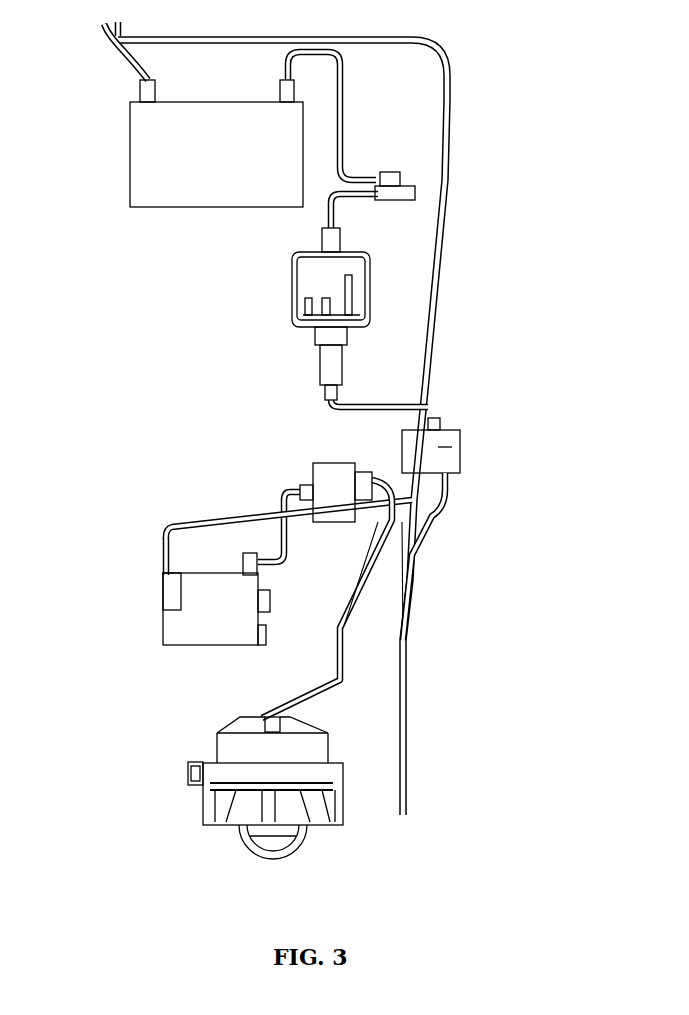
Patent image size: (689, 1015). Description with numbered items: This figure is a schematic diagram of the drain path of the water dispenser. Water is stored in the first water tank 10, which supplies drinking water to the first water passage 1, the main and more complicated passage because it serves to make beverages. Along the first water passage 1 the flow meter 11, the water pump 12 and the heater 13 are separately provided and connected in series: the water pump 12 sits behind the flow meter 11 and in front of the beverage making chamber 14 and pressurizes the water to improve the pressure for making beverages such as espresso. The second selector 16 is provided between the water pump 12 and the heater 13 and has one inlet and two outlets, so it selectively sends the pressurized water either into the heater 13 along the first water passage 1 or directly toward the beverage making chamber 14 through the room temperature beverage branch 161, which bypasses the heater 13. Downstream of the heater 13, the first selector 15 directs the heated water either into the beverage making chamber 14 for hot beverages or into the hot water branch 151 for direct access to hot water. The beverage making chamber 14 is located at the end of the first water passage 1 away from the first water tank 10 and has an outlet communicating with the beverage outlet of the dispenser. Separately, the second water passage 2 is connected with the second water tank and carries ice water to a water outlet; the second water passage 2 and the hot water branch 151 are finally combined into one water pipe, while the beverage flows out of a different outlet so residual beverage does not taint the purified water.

The first water passage 1 is at (118, 52).
The second water passage 2 is at (452, 106).
The first water tank 10 is at (145, 158).
The flow meter 11 is at (414, 194).
The water pump 12 is at (305, 288).
The heater 13 is at (175, 633).
The beverage making chamber 14 is at (275, 778).
The first selector 15 is at (322, 480).
The hot water branch 151 is at (382, 482).
The second selector 16 is at (452, 447).
The room temperature beverage branch 161 is at (440, 510).